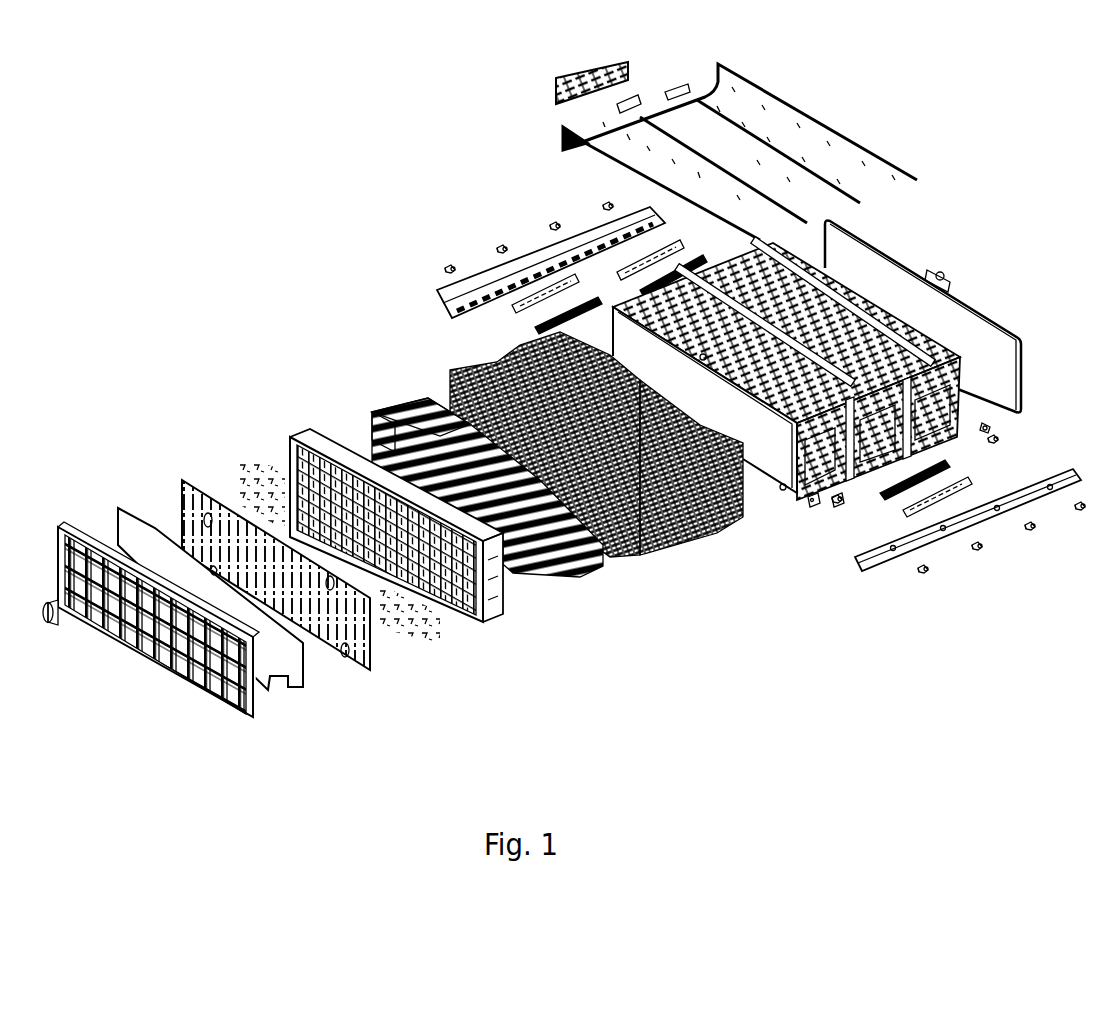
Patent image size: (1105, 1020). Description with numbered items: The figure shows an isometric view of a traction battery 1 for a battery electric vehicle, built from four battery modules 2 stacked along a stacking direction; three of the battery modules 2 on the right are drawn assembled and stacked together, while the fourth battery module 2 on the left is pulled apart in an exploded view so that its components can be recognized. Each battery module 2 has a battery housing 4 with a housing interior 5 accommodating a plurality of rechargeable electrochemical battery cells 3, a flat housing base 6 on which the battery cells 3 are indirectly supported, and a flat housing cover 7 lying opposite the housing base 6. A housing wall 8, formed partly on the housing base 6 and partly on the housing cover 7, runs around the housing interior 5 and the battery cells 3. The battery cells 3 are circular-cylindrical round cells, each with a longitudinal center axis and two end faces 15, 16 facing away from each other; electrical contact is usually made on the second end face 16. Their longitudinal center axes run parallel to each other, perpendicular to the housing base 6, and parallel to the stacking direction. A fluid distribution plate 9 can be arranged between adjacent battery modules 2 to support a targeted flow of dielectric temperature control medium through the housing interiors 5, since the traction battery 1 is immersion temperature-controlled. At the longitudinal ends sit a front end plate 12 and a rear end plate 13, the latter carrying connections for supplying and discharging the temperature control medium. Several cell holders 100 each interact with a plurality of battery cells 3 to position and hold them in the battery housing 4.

The traction battery 1 is at (259, 237).
The battery module 2 is at (857, 375).
The battery cell 3 is at (470, 493).
The battery housing 4 is at (887, 557).
The housing interior 5 is at (620, 455).
The housing base 6 is at (722, 533).
The housing cover 7 is at (495, 625).
The housing wall 8 is at (650, 400).
The fluid distribution plate 9 is at (370, 665).
The front end plate 12 is at (253, 717).
The rear end plate 13 is at (998, 327).
The first end face 15 is at (416, 396).
The second end face 16 is at (349, 419).
The cell holder 100 is at (682, 436).